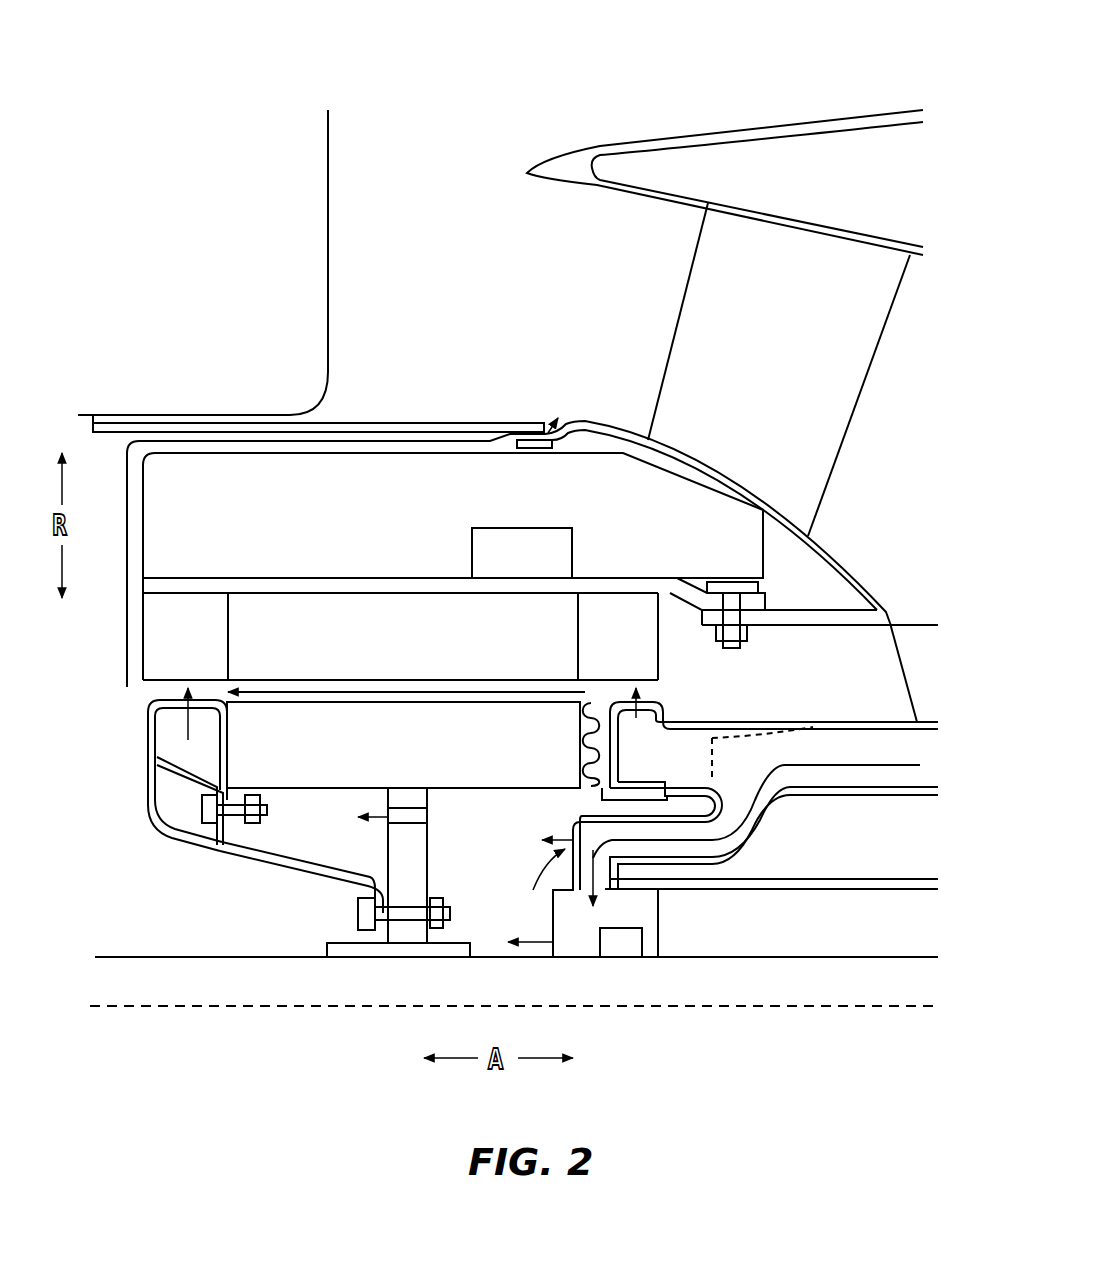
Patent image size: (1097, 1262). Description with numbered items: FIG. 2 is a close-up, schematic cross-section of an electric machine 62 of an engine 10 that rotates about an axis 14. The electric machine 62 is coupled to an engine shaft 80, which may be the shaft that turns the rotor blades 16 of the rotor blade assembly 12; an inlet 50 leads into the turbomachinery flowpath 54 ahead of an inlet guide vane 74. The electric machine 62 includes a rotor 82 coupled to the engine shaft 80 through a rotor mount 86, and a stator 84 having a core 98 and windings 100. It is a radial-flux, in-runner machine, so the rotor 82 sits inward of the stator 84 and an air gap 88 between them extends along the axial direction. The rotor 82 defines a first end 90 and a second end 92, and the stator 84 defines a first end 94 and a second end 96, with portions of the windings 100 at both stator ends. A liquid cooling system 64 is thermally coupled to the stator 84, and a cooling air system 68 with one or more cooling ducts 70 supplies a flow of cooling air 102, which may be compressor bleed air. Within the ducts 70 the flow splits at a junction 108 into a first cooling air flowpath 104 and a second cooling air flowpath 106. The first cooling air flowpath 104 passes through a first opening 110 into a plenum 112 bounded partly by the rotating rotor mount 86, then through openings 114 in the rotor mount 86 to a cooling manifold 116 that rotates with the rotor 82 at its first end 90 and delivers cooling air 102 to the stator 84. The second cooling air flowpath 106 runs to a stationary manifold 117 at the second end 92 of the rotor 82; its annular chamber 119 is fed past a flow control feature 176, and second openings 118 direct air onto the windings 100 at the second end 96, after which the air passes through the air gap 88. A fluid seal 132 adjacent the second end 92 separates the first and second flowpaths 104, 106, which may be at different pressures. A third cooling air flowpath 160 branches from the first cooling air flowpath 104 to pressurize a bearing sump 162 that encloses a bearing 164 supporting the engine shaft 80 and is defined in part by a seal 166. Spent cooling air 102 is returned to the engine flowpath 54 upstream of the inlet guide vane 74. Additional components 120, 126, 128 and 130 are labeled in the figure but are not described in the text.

The engine 10 is at (509, 46).
The rotor blade assembly 12 is at (55, 262).
The axis 14 is at (514, 1033).
The rotor blades 16 is at (203, 262).
The inlet 50 is at (677, 182).
The turbomachinery flowpath 54 is at (898, 586).
The electric machine 62 is at (453, 566).
The liquid cooling system 64 is at (522, 553).
The cooling air system 68 is at (901, 602).
The cooling ducts 70 is at (831, 672).
The inlet guide vane 74 is at (779, 369).
The engine shaft 80 is at (516, 1012).
The rotor 82 is at (403, 745).
The stator 84 is at (376, 569).
The rotor mount 86 is at (401, 872).
The air gap 88 is at (406, 661).
The first end 90 is at (288, 741).
The second end 92 is at (508, 753).
The first end 94 is at (473, 554).
The second end 96 is at (773, 615).
The core 98 is at (400, 636).
The windings 100 is at (411, 636).
The flow of cooling air 102 is at (486, 617).
The first cooling air flowpath 104 is at (765, 872).
The second cooling air flowpath 106 is at (797, 709).
The junction 108 is at (699, 869).
The first opening 110 is at (539, 895).
The plenum 112 is at (462, 928).
The openings 114 is at (301, 874).
The cooling manifold 116 is at (98, 875).
The stationary manifold 117 is at (668, 687).
The second openings 118 is at (679, 739).
The annular chamber 119 is at (634, 765).
The fastener 120 is at (312, 931).
The first seal leg 126 is at (135, 746).
The second seal leg 128 is at (136, 824).
The gap 130 is at (115, 704).
The fluid seal 132 is at (607, 650).
The third cooling air flowpath 160 is at (672, 905).
The bearing sump 162 is at (628, 996).
The bearing 164 is at (634, 965).
The seal 166 is at (661, 948).
The flow control feature 176 is at (782, 725).